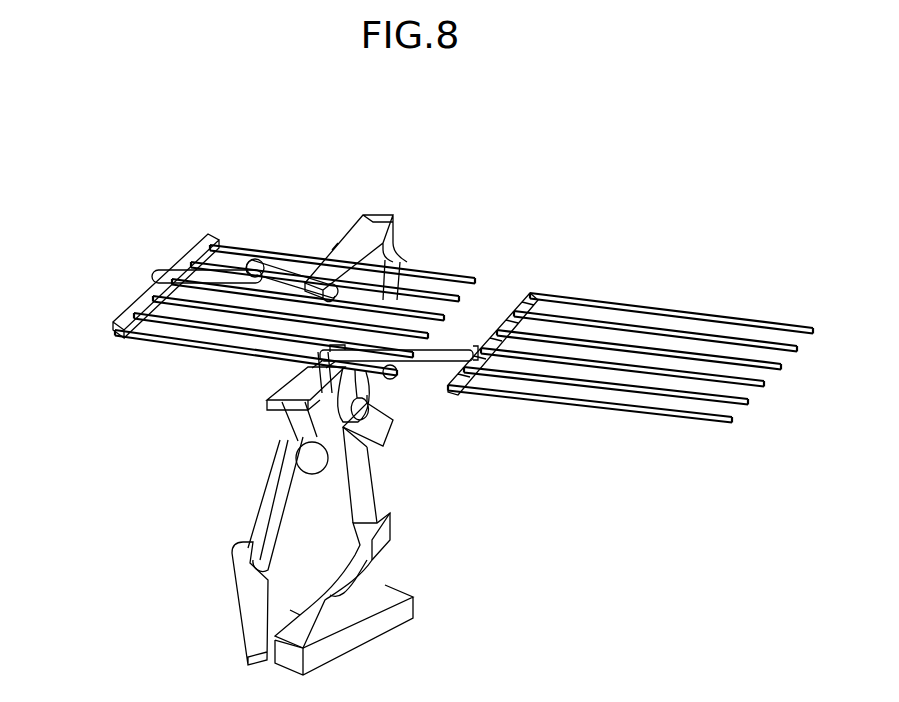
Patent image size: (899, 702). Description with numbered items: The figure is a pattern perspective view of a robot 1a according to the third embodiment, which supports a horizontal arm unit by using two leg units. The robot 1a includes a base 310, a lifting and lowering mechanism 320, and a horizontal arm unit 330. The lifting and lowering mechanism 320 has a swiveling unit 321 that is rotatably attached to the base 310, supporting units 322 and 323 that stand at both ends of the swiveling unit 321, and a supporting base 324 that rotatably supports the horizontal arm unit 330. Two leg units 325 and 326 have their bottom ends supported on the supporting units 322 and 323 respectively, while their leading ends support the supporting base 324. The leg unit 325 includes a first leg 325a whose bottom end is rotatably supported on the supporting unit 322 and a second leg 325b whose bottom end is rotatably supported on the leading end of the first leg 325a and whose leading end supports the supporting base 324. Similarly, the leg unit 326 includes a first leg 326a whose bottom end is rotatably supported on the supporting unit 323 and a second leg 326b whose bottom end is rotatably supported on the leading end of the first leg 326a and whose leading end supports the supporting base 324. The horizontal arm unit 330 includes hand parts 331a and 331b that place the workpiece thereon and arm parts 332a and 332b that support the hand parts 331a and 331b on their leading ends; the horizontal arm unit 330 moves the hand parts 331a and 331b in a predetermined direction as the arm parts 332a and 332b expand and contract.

The robot 1a is at (656, 132).
The horizontal arm unit 330 is at (449, 186).
The hand part 331a is at (538, 305).
The hand part 331b is at (140, 312).
The arm part 332a is at (457, 352).
The arm part 332b is at (278, 270).
The lifting and lowering mechanism 320 is at (100, 428).
The swiveling unit 321 is at (348, 578).
The supporting unit 322 is at (253, 628).
The supporting unit 323 is at (382, 497).
The supporting base 324 is at (297, 380).
The leg unit 325 is at (160, 436).
The first leg 325a is at (285, 470).
The second leg 325b is at (297, 433).
The leg unit 326 is at (532, 413).
The first leg 326a is at (387, 430).
The second leg 326b is at (380, 402).
The base 310 is at (360, 635).